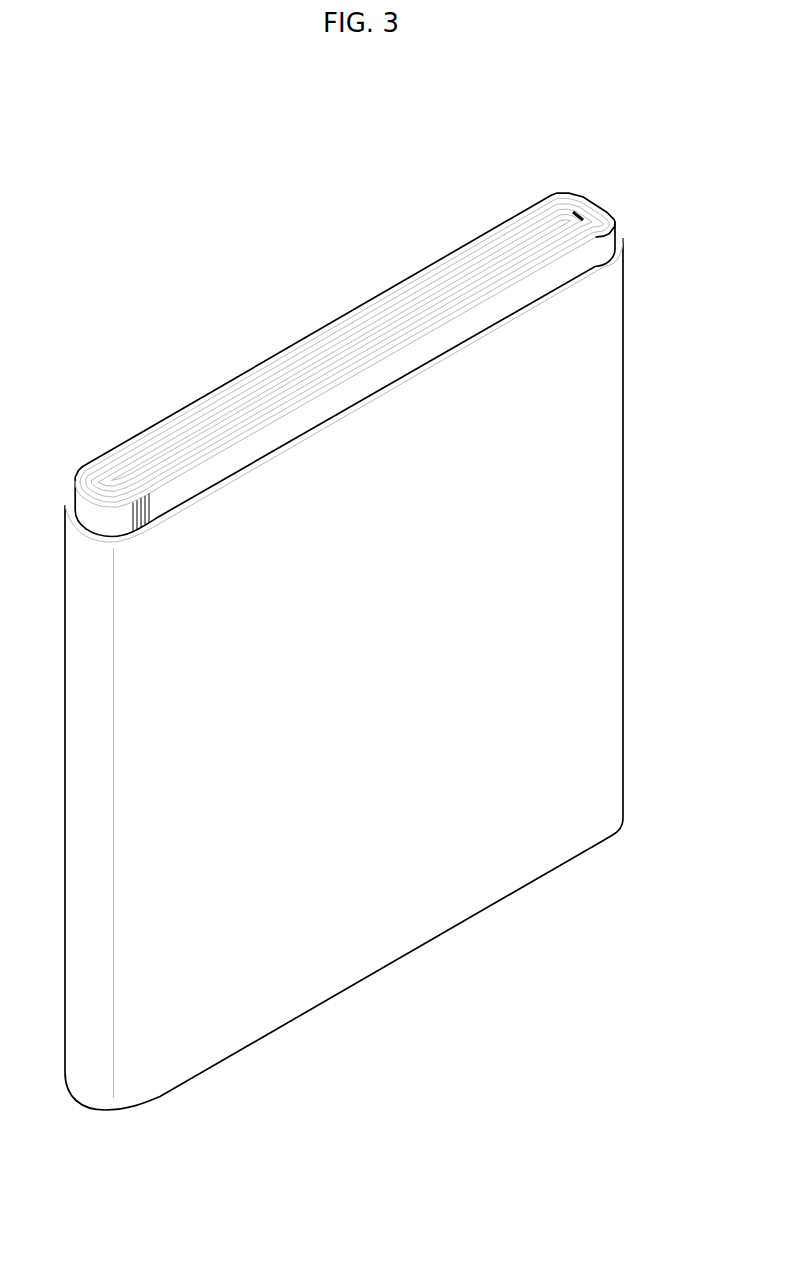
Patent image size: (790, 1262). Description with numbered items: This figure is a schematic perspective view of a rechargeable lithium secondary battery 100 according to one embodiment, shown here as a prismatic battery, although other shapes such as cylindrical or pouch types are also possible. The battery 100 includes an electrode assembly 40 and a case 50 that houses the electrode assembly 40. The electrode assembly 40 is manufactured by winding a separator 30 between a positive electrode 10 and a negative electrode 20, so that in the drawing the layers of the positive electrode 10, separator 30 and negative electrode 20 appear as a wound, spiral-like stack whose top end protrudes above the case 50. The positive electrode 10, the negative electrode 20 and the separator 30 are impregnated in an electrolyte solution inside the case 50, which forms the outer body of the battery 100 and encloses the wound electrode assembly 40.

The lithium secondary battery 100 is at (337, 148).
The positive electrode 10 is at (620, 212).
The negative electrode 20 is at (601, 210).
The separator 30 is at (608, 218).
The electrode assembly 40 is at (297, 311).
The case 50 is at (612, 513).